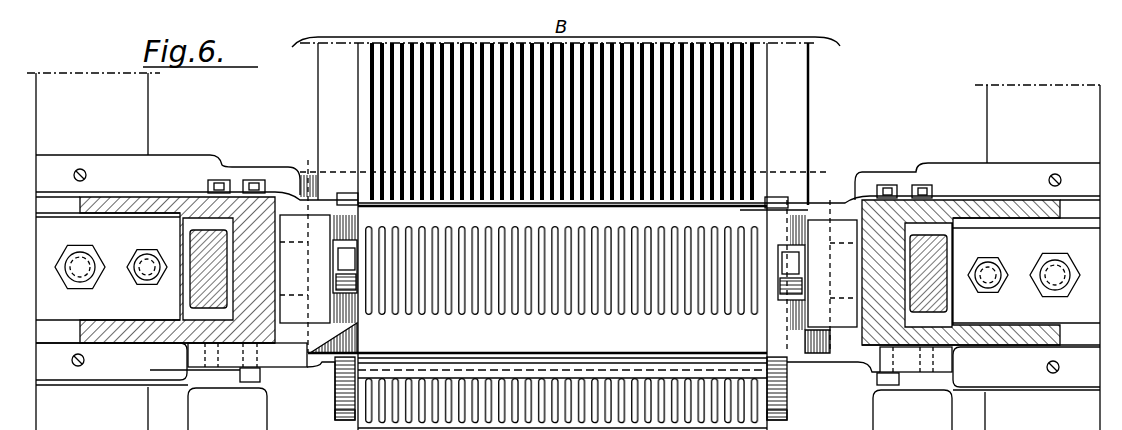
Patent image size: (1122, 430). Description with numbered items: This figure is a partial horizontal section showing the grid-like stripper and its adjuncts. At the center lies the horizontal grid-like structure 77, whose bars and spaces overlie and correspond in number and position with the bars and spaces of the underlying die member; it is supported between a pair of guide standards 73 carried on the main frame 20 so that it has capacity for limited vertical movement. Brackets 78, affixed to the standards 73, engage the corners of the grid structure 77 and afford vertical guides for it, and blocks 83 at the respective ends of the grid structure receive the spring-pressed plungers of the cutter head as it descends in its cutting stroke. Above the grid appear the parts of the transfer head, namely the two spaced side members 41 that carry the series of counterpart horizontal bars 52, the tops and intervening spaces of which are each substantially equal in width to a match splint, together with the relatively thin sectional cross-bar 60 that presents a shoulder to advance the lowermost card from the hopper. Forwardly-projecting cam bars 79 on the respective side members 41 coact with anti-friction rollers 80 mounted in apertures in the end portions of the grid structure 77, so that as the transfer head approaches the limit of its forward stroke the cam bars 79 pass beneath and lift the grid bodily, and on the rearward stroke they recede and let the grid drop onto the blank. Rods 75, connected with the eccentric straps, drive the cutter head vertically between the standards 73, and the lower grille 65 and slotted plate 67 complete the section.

The main frame 20 is at (564, 251).
The side members 41 is at (318, 93).
The horizontal bars 52 is at (718, 77).
The sectional cross-bar 60 is at (752, 205).
The lower grille 65 is at (663, 380).
The slotted plate 67 is at (461, 349).
The guide standards 73 is at (1006, 203).
The rods 75 is at (105, 222).
The grid-like structure 77 is at (537, 354).
The brackets 78 is at (296, 186).
The cam bars 79 is at (343, 193).
The anti-friction rollers 80 is at (338, 262).
The blocks 83 is at (322, 315).